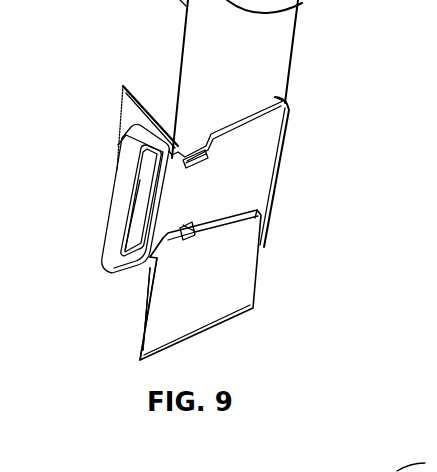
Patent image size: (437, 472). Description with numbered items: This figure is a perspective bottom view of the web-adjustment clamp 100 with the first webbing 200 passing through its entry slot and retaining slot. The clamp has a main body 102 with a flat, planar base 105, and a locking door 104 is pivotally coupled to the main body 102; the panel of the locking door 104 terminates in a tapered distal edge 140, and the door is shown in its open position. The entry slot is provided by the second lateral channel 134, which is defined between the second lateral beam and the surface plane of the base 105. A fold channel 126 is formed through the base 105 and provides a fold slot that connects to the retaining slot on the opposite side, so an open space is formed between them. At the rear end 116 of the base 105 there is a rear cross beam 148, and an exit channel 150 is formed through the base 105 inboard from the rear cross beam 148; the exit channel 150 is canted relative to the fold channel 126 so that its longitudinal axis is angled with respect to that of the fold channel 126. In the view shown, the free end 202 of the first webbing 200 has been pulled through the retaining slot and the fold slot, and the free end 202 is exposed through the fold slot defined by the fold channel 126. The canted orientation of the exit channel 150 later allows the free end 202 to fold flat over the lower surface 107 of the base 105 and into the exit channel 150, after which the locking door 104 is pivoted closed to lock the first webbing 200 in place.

The web-adjustment clamp 100 is at (158, 72).
The main body 102 is at (290, 127).
The locking door 104 is at (118, 110).
The base 105 is at (258, 156).
The lower surface 107 is at (220, 177).
The rear end 116 is at (146, 270).
The fold channel 126 is at (141, 266).
The second lateral channel 134 is at (283, 93).
The tapered distal edge 140 is at (117, 147).
The rear cross beam 148 is at (115, 193).
The exit channel 150 is at (136, 188).
The first webbing 200 is at (287, 42).
The free end 202 is at (218, 325).